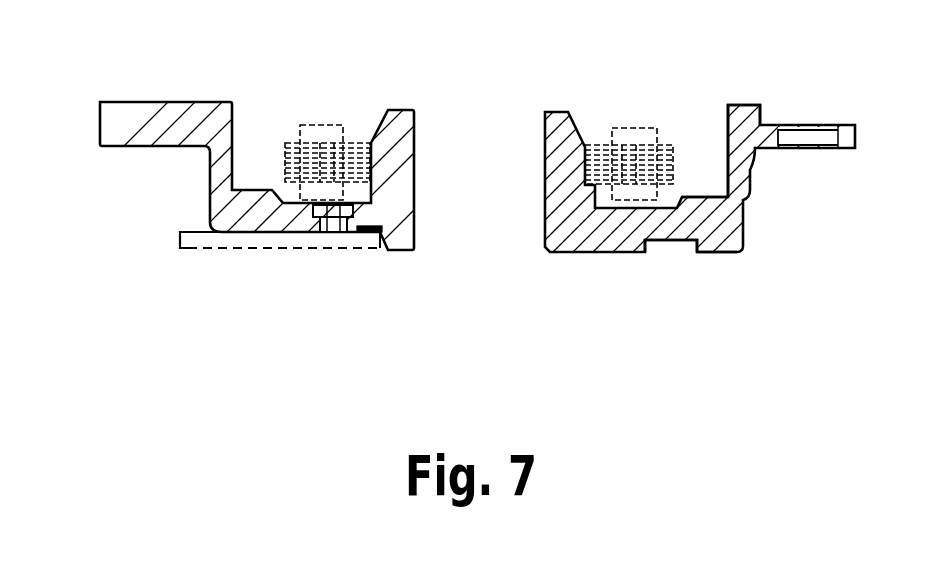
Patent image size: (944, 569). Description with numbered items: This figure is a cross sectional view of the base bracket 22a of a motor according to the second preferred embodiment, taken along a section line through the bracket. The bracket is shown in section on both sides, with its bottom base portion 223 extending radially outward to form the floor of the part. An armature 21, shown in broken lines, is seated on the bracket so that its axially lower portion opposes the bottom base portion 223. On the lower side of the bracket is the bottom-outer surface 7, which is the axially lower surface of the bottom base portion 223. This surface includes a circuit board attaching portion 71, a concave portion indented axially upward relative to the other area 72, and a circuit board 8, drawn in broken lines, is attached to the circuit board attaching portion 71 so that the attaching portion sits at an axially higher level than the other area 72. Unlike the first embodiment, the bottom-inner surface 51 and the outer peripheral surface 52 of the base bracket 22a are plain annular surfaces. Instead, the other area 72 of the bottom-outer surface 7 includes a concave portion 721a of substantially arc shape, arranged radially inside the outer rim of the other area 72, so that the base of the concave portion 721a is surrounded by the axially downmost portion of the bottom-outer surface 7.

The base bracket 22a is at (118, 73).
The armature 21 is at (322, 127).
The circuit board 8 is at (260, 242).
The concave portion (circuit board attaching portion) 71 is at (305, 236).
The bottom-outer surface 7 is at (700, 362).
The bottom-inner surface 51 is at (645, 207).
The outer peripheral surface 52 is at (692, 196).
The bottom base portion 223 is at (731, 226).
The concave portion 721a is at (658, 254).
The other area 72 is at (710, 255).